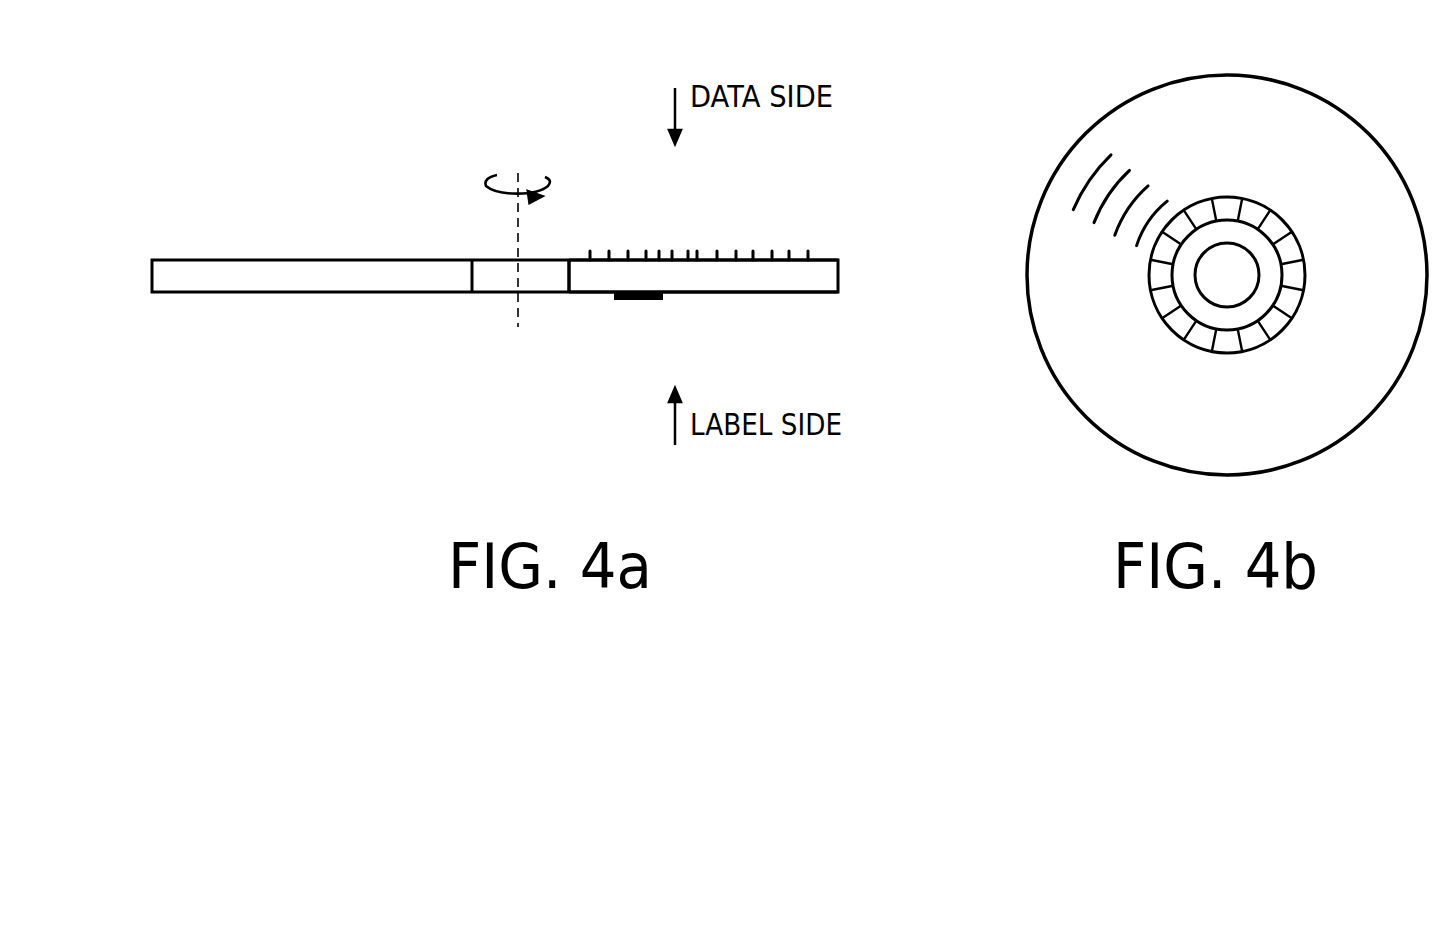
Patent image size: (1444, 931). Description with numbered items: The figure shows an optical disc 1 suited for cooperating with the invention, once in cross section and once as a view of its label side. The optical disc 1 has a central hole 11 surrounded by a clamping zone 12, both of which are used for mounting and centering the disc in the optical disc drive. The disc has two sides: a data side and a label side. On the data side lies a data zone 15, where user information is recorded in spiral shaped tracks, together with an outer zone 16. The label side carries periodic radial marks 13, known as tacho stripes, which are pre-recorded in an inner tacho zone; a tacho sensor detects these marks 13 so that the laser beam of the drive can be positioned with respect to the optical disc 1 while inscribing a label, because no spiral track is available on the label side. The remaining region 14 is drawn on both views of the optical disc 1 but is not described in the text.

In FIG. 4A, the optical disc 1 is at (178, 258).
In FIG. 4B, the optical disc 1 is at (1031, 321).
In FIG. 4A, the central hole 11 is at (540, 295).
In FIG. 4B, the central hole 11 is at (1242, 265).
In FIG. 4A, the clamping zone 12 is at (592, 295).
In FIG. 4B, the clamping zone 12 is at (1268, 296).
In FIG. 4A, the periodic marks 13 is at (644, 302).
In FIG. 4B, the periodic marks 13 is at (1277, 333).
In FIG. 4A, the data track area 14 is at (738, 295).
In FIG. 4B, the data track area 14 is at (1090, 182).
In FIG. 4A, the data zone 15 is at (672, 256).
In FIG. 4A, the outer zone 16 is at (822, 258).